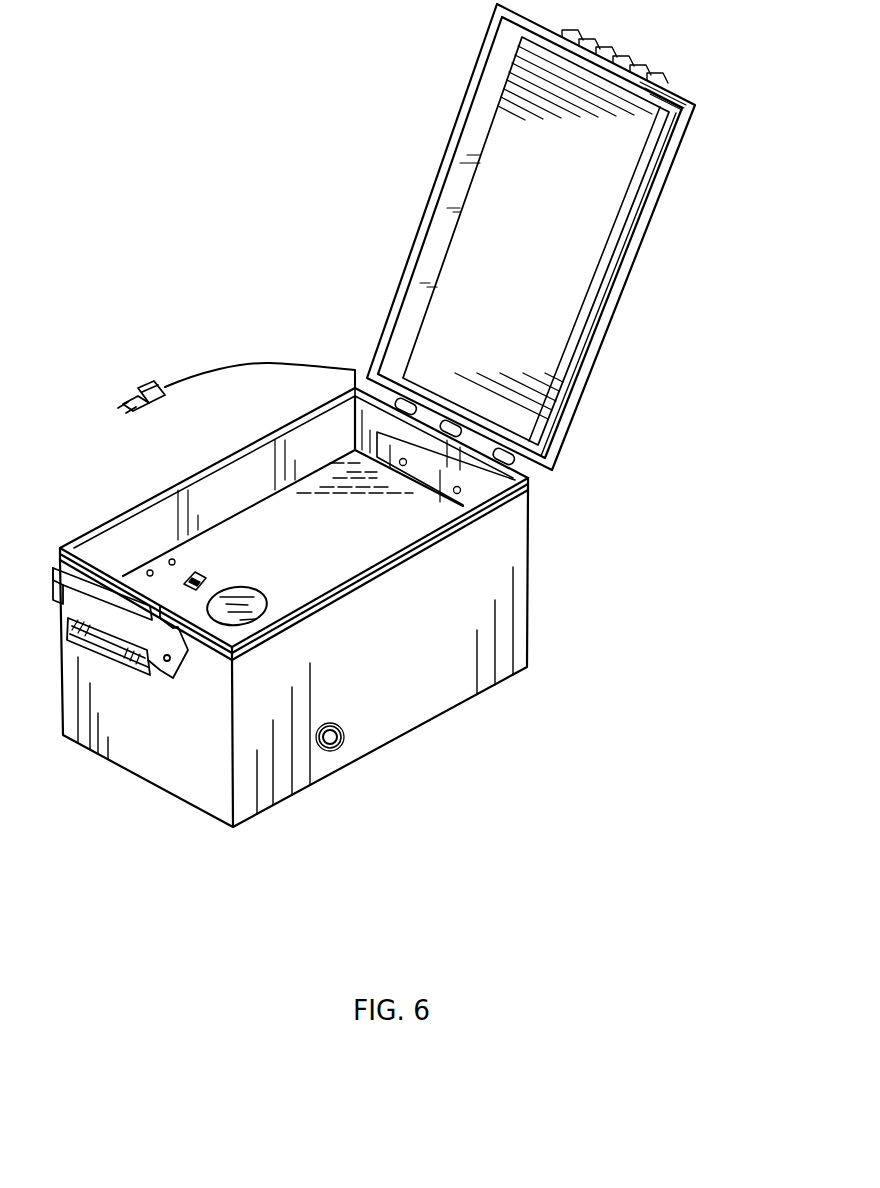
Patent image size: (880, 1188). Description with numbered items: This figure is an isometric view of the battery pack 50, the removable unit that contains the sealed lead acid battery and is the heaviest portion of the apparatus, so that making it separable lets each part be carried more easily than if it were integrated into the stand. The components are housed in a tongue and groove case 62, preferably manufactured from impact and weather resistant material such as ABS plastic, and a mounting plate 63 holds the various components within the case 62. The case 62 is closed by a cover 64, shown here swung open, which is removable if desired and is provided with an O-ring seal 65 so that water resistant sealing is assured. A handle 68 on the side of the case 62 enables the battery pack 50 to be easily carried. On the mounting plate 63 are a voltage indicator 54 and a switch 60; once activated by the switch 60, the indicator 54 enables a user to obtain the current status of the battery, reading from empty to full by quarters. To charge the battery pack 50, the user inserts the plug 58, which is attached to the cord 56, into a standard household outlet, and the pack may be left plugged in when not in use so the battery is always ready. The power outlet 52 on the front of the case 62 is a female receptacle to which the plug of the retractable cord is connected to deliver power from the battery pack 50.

The battery pack 50 is at (507, 728).
The power outlet 52 is at (343, 738).
The voltage indicator 54 is at (262, 593).
The cord 56 is at (237, 362).
The plug 58 is at (140, 392).
The switch 60 is at (200, 568).
The tongue and groove case 62 is at (528, 600).
The mounting plate 63 is at (378, 532).
The cover 64 is at (583, 436).
The O-ring seal 65 is at (608, 278).
The handle 68 is at (157, 680).